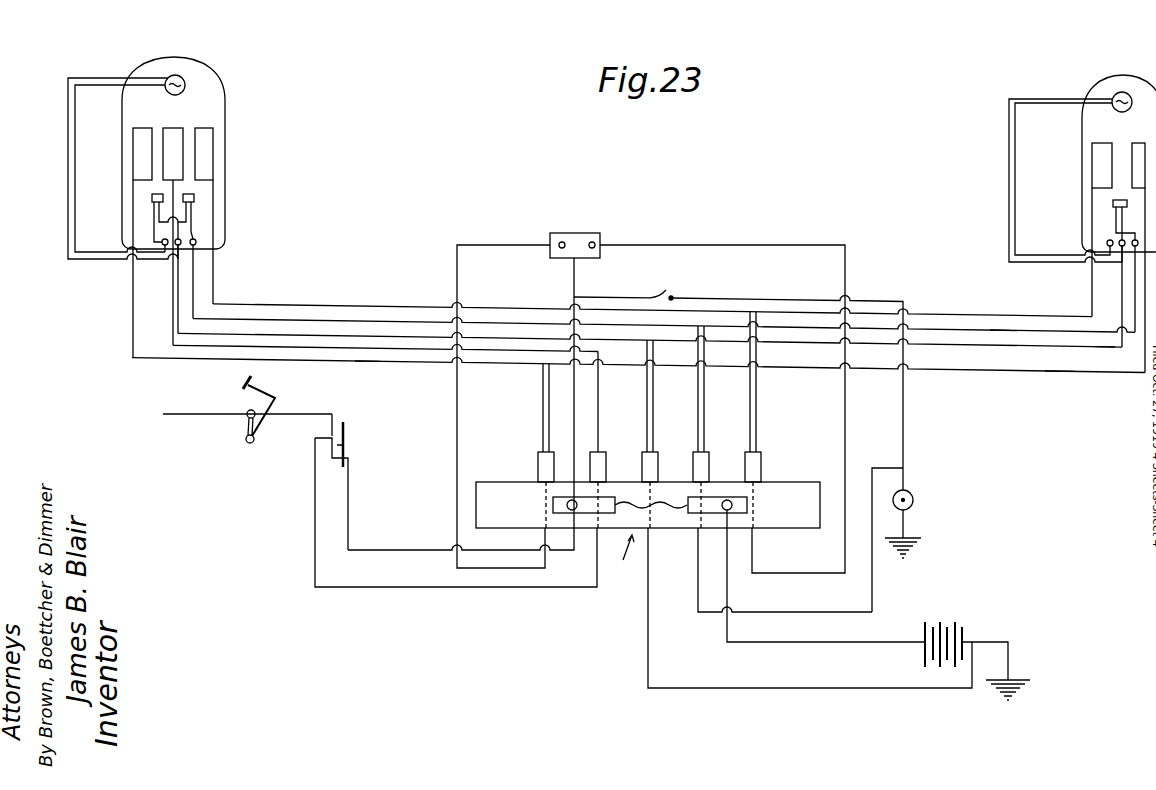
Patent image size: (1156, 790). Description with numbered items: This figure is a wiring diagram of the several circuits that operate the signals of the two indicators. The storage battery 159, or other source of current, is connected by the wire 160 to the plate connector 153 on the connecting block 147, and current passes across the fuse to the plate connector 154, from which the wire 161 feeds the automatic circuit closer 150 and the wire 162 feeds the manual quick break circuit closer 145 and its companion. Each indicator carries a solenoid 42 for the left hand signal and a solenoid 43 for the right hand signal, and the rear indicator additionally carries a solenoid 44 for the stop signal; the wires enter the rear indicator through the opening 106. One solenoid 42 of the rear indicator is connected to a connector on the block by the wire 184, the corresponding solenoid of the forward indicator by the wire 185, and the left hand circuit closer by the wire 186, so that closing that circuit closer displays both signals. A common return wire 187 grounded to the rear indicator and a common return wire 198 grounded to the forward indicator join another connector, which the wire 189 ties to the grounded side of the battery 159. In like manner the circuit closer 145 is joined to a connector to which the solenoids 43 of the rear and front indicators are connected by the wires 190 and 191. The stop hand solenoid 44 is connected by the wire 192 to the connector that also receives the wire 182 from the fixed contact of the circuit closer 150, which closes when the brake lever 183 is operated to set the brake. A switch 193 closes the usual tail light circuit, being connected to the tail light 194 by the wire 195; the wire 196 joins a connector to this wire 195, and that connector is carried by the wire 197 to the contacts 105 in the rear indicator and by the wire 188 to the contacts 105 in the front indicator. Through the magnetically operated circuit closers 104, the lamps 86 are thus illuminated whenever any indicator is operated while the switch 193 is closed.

The solenoid 42 is at (142, 146).
The solenoid 43 is at (205, 157).
The solenoid 44 is at (172, 140).
The electric lamp 86 is at (185, 85).
The hammer-like head 104 is at (152, 197).
The extensions 105 is at (152, 212).
The opening 106 is at (562, 242).
The quick break circuit closer 145 is at (846, 432).
The connecting block 147 is at (643, 596).
The circuit closer 150 is at (346, 430).
The plate connector 153 is at (713, 508).
The plate connector 154 is at (558, 503).
The storage battery 159 is at (937, 627).
The wire 160 is at (698, 604).
The wire 161 is at (420, 538).
The wire 162 is at (574, 288).
The wire 182 is at (427, 588).
The brake lever 183 is at (265, 388).
The wire 184 is at (367, 363).
The wire 185 is at (1060, 373).
The wire 186 is at (459, 399).
The common return wire 187 is at (638, 375).
The wire 188 is at (1003, 334).
The wire 189 is at (648, 655).
The wire 190 is at (395, 334).
The wire 191 is at (1003, 316).
The wire 192 is at (332, 347).
The switch 193 is at (676, 285).
The tail light 194 is at (913, 500).
The wire 195 is at (775, 301).
The wire 196 is at (872, 582).
The wire 197 is at (275, 318).
The common return wire 198 is at (1107, 348).